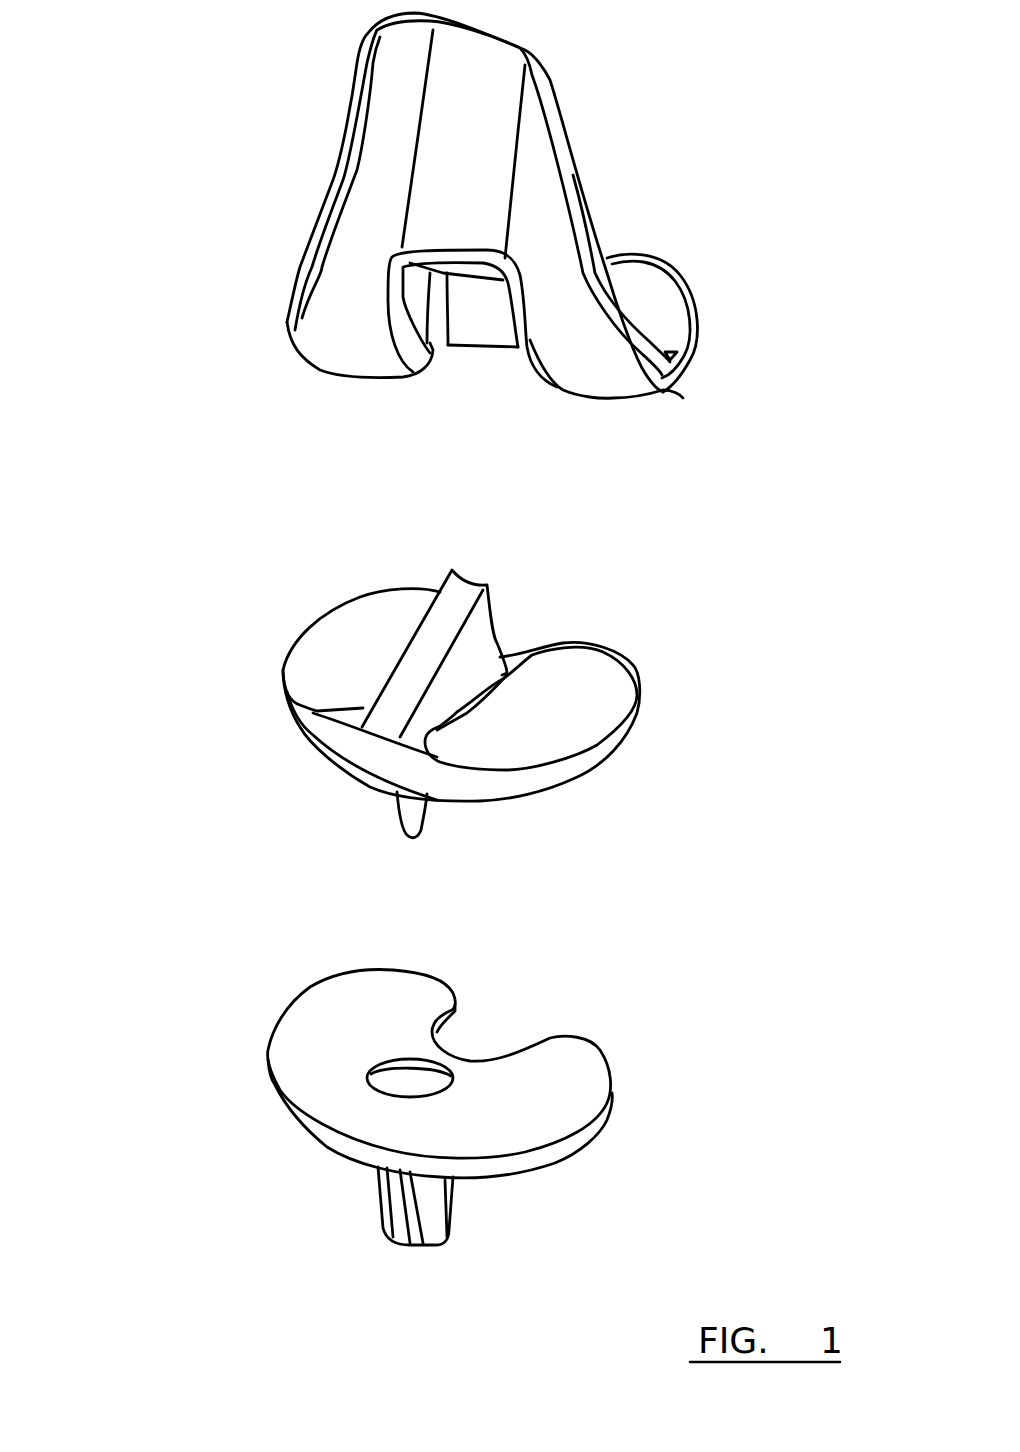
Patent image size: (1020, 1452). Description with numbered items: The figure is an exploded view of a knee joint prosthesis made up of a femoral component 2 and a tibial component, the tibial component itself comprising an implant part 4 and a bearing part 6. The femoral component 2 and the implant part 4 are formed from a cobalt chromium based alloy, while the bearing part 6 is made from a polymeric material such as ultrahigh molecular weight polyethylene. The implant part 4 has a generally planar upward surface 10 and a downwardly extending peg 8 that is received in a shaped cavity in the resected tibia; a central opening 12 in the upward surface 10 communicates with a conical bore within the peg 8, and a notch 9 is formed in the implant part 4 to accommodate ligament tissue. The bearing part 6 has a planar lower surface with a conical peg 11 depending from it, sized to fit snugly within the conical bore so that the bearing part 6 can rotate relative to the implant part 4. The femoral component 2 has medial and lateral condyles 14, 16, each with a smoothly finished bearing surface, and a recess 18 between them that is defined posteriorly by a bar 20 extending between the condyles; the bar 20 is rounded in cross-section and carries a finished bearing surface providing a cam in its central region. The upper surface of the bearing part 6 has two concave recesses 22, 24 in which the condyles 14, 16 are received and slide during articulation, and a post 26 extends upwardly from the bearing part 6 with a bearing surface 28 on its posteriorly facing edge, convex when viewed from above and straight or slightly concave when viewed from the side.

The femoral component 2 is at (402, 262).
The implant part 4 is at (413, 1118).
The bearing part 6 is at (453, 679).
The downwardly extending peg 8 is at (453, 1217).
The notch 9 is at (488, 1036).
The upward surface 10 is at (560, 1093).
The peg 11 is at (413, 813).
The central opening 12 is at (393, 1078).
The medial condyle 14 is at (347, 377).
The lateral condyle 16 is at (597, 398).
The recess 18 is at (417, 293).
The bar 20 is at (483, 357).
The concave recess 22 is at (377, 627).
The concave recess 24 is at (585, 703).
The post 26 is at (412, 693).
The bearing surface 28 is at (500, 618).